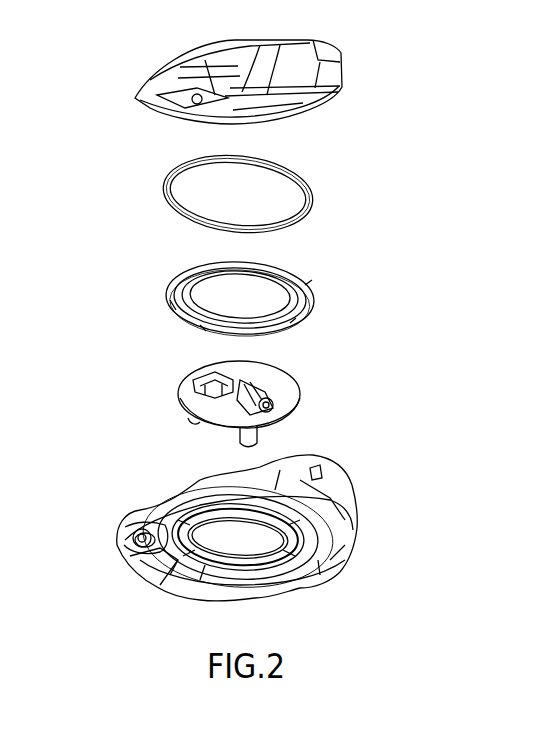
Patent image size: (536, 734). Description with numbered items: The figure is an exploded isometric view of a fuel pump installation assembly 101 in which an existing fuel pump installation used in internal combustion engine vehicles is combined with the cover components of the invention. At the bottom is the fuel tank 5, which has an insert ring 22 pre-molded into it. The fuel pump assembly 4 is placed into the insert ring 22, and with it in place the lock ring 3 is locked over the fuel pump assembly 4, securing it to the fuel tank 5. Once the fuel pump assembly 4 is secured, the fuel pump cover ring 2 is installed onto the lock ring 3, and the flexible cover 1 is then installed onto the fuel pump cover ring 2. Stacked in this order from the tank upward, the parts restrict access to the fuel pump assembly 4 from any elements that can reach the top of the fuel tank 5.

The fuel pump installation assembly 101 is at (387, 78).
The flexible cover 1 is at (140, 98).
The fuel pump cover ring 2 is at (162, 187).
The lock ring 3 is at (167, 298).
The fuel pump assembly 4 is at (183, 404).
The fuel tank 5 is at (165, 495).
The insert ring 22 is at (160, 548).